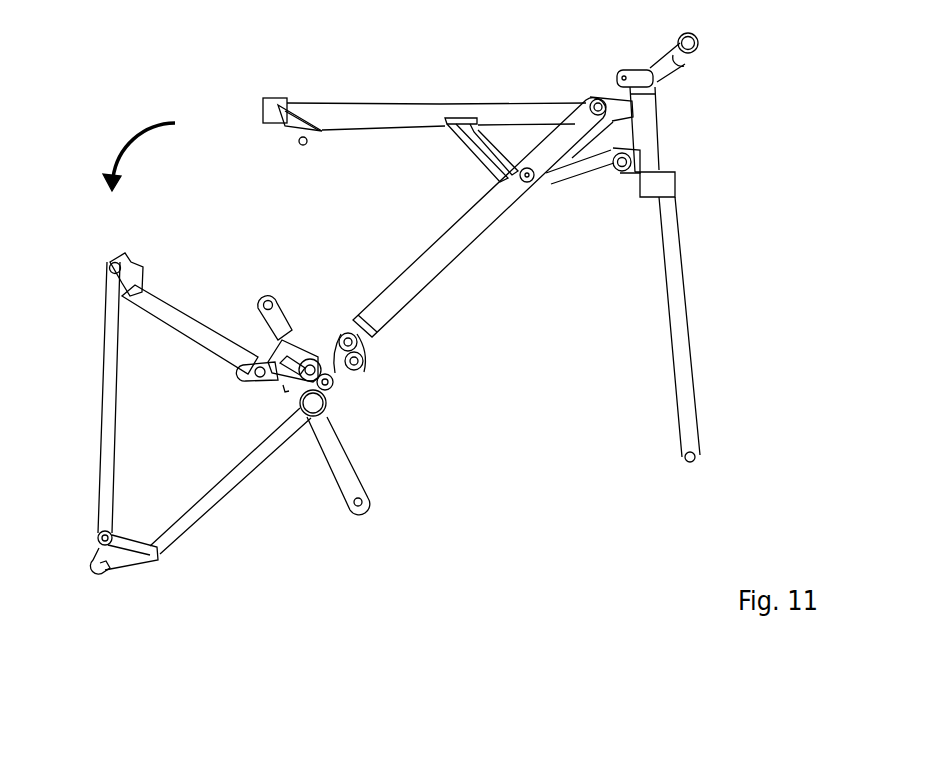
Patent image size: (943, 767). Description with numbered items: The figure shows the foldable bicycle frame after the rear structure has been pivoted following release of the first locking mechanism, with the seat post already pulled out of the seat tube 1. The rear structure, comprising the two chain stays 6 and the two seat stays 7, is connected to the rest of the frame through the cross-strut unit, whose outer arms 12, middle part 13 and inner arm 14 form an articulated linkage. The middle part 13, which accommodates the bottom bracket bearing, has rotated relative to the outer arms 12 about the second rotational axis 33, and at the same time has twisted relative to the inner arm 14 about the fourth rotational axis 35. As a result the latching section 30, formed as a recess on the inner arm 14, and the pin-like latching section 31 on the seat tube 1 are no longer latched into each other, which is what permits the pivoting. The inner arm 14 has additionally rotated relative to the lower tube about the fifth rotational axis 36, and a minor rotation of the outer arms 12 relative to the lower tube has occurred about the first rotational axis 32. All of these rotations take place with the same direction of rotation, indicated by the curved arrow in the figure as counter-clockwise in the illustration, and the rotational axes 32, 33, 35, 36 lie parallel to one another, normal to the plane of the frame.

The seat tube 1 is at (168, 315).
The chain stays 6 is at (187, 513).
The seat stays 7 is at (112, 394).
The outer arms 12 is at (335, 366).
The middle part 13 is at (250, 378).
The inner arm 14 is at (310, 370).
The latching section 30 is at (280, 335).
The latching section 31 is at (266, 358).
The first rotational axis 32 is at (357, 342).
The second rotational axis 33 is at (332, 390).
The fourth rotational axis 35 is at (327, 382).
The fifth rotational axis 36 is at (360, 364).